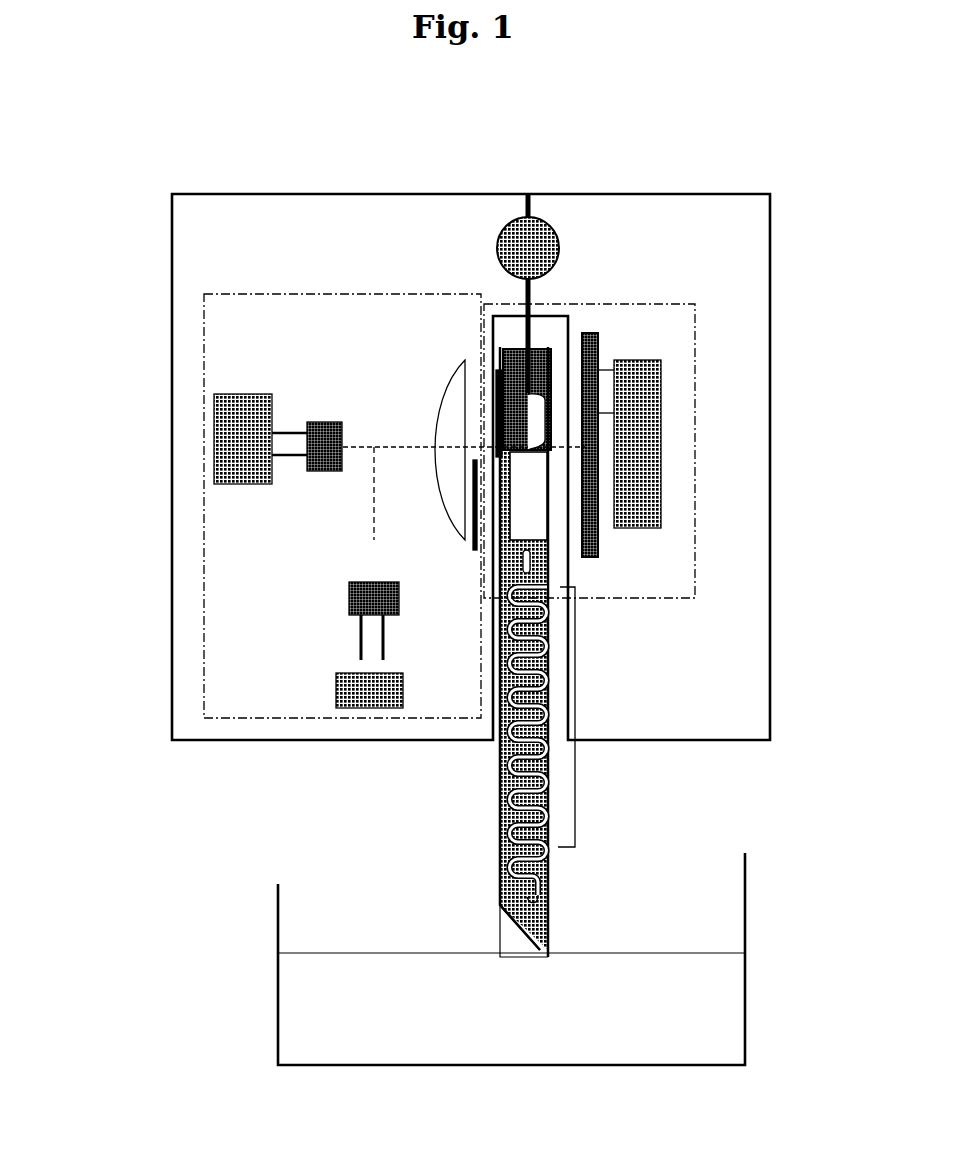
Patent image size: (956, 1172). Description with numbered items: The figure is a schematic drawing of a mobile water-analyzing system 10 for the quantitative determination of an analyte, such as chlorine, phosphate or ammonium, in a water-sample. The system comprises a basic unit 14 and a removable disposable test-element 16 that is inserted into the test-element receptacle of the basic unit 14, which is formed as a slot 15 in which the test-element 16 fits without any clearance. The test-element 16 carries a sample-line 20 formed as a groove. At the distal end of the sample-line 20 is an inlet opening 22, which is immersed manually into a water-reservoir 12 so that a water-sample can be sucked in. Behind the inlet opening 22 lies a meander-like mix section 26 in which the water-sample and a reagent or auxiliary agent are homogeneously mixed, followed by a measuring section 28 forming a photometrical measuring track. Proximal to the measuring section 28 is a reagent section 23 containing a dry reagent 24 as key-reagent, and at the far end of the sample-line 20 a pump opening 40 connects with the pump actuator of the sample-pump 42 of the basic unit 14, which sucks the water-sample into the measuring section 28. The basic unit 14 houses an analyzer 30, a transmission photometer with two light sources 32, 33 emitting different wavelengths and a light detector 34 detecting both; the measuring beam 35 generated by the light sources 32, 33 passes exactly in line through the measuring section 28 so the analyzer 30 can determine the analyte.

The mobile water-analyzing system 10 is at (104, 304).
The water-reservoir 12 is at (350, 1020).
The basic unit 14 is at (147, 575).
The slot 15 is at (560, 557).
The test-element 16 is at (493, 781).
The sample-line 20 is at (553, 897).
The inlet opening 22 is at (524, 897).
The reagent section 23 is at (598, 373).
The dry reagent 24 is at (560, 410).
The mix section 26 is at (576, 762).
The measuring section 28 is at (545, 463).
The analyzer 30 is at (199, 370).
The light source 32 is at (342, 472).
The light source 33 is at (370, 557).
The light detector 34 is at (590, 413).
The measuring beam 35 is at (348, 472).
The pump opening 40 is at (552, 352).
The sample-pump 42 is at (557, 238).